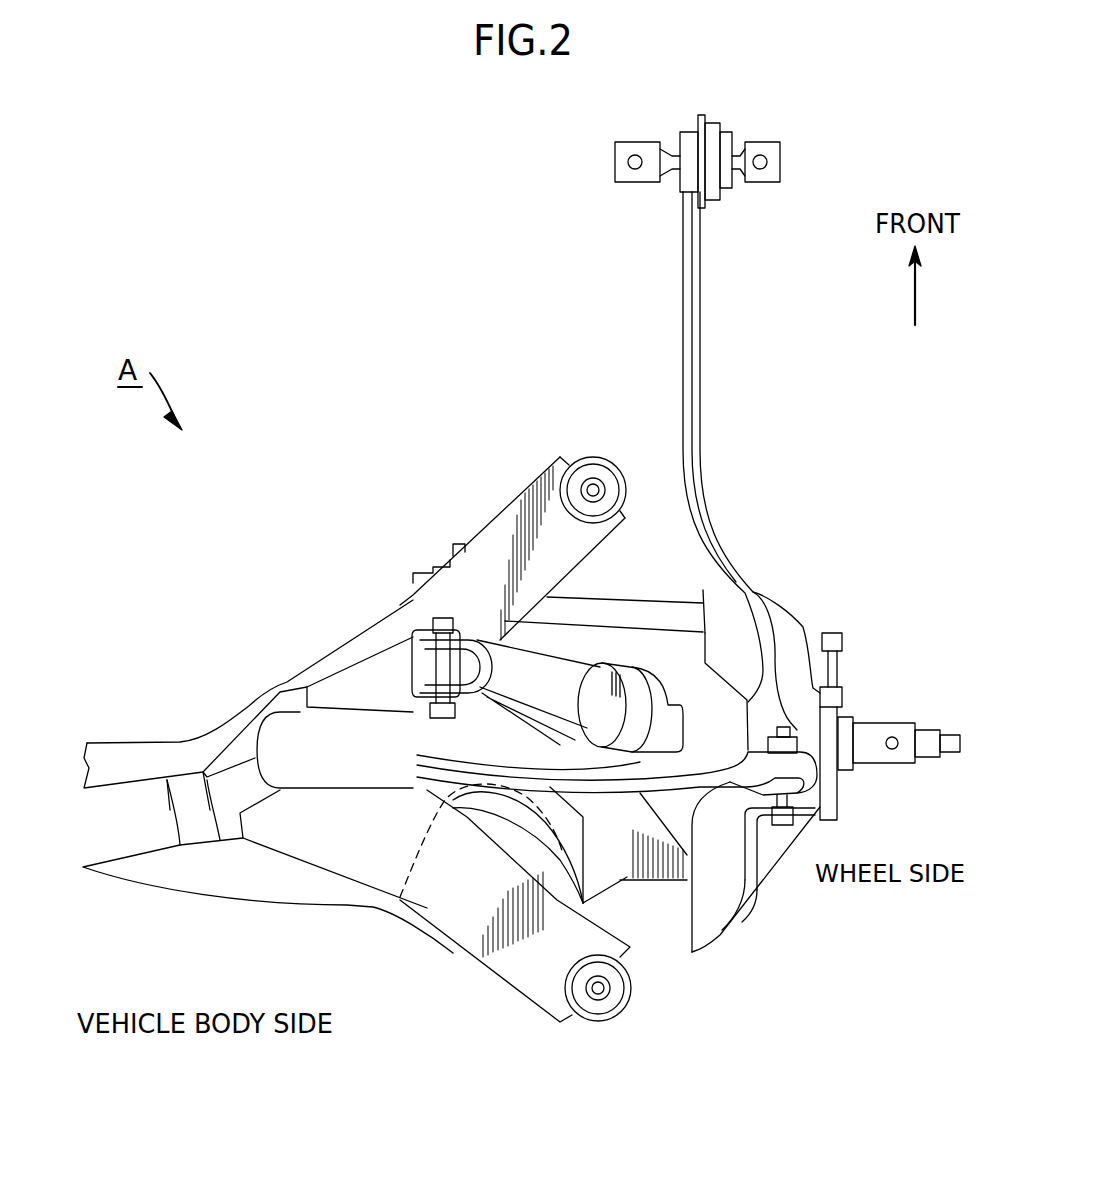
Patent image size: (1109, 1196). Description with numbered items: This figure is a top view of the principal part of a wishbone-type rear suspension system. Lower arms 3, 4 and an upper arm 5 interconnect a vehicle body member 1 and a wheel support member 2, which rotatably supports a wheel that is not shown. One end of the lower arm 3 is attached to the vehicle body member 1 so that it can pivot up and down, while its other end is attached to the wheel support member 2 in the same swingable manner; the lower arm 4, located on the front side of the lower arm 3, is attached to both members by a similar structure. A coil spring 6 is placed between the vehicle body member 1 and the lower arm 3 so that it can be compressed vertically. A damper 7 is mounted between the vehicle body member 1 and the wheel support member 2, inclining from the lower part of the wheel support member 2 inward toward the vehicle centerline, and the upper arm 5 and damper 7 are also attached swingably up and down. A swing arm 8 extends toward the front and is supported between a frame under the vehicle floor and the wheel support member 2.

The vehicle body member 1 is at (327, 670).
The wheel support member 2 is at (797, 622).
The lower arm 3 is at (625, 875).
The lower arm 4 is at (636, 612).
The upper arm 5 is at (400, 710).
The coil spring 6 is at (420, 870).
The damper 7 is at (537, 670).
The swing arm 8 is at (703, 430).